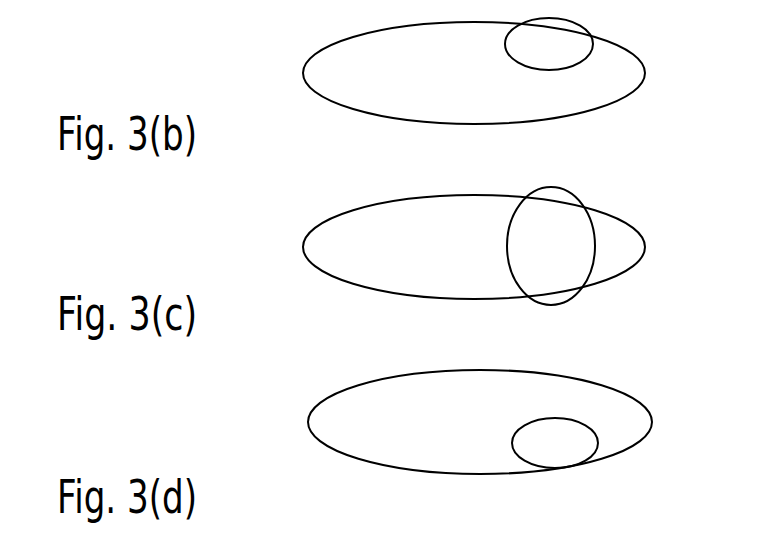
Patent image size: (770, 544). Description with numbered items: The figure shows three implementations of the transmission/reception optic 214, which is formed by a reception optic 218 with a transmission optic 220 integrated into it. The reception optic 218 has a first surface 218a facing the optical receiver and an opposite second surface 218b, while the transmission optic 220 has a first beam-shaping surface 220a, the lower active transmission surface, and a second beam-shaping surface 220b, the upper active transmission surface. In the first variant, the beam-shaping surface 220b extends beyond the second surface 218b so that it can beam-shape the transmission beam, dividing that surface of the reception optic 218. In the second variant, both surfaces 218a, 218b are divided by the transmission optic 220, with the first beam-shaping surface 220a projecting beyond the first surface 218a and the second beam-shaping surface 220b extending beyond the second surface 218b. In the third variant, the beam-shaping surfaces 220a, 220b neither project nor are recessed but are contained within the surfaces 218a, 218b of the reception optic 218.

In FIG. 3B, the transmission/reception optic 214 is at (362, 30).
In FIG. 3C, the transmission/reception optic 214 is at (365, 203).
In FIG. 3D, the transmission/reception optic 214 is at (367, 383).
In FIG. 3B, the reception optic 218 is at (483, 90).
In FIG. 3C, the reception optic 218 is at (483, 264).
In FIG. 3D, the reception optic 218 is at (481, 438).
In FIG. 3B, the first surface of the reception optic 218a is at (629, 98).
In FIG. 3C, the first surface of the reception optic 218a is at (632, 268).
In FIG. 3D, the first surface of the reception optic 218a is at (357, 416).
In FIG. 3B, the second surface of the reception optic 218b is at (342, 40).
In FIG. 3C, the second surface of the reception optic 218b is at (345, 212).
In FIG. 3D, the second surface of the reception optic 218b is at (345, 390).
In FIG. 3B, the transmission optic 220 is at (575, 60).
In FIG. 3C, the transmission optic 220 is at (577, 264).
In FIG. 3D, the transmission optic 220 is at (581, 458).
In FIG. 3C, the first beam-shaping surface 220a is at (550, 305).
In FIG. 3D, the first beam-shaping surface 220a is at (565, 468).
In FIG. 3B, the second beam-shaping surface 220b is at (580, 25).
In FIG. 3C, the second beam-shaping surface 220b is at (578, 200).